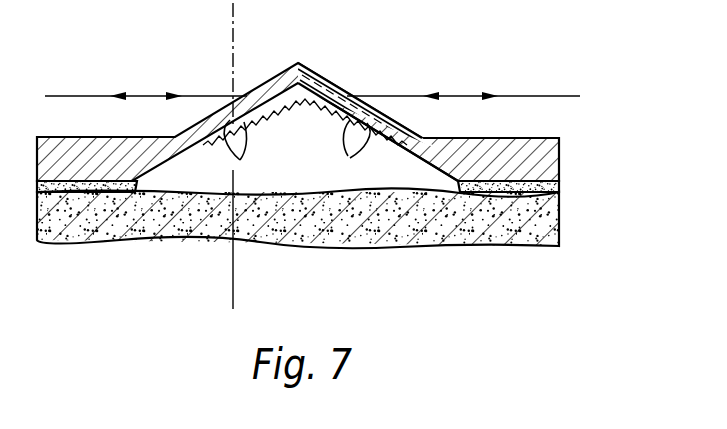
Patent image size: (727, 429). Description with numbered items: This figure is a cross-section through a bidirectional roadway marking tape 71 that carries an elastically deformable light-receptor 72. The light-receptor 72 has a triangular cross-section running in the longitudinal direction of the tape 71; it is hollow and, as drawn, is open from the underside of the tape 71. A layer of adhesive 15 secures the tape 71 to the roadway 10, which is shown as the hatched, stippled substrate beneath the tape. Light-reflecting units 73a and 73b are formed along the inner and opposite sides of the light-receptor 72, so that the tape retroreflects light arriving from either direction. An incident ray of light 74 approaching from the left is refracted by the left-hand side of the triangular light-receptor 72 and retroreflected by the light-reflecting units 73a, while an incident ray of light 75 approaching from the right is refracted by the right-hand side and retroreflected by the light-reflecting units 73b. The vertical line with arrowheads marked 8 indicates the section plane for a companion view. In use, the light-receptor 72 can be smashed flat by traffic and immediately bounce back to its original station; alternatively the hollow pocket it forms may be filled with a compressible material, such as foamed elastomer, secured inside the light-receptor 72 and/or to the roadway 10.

The section line 8- 8 is at (247, 25).
The roadway 10 is at (548, 217).
The adhesive 15 is at (525, 190).
The marking tape 71 is at (543, 162).
The light-receptor 72 is at (328, 90).
The light-reflecting units 73a is at (252, 146).
The light-reflecting units 73b is at (348, 156).
The incident ray of light 74 is at (85, 96).
The incident ray of light 75 is at (528, 96).